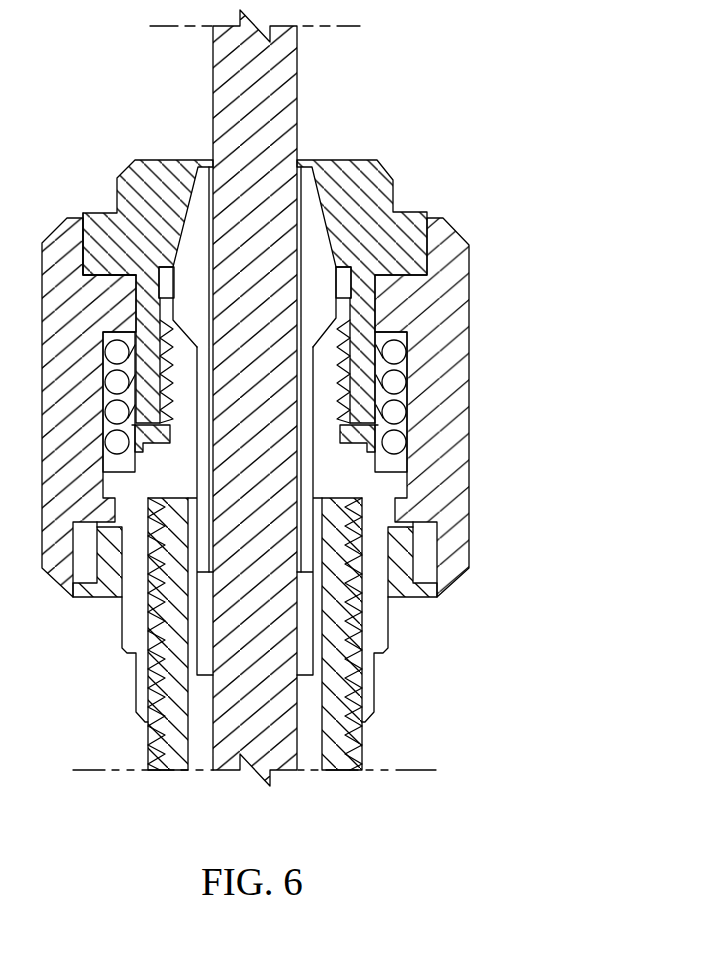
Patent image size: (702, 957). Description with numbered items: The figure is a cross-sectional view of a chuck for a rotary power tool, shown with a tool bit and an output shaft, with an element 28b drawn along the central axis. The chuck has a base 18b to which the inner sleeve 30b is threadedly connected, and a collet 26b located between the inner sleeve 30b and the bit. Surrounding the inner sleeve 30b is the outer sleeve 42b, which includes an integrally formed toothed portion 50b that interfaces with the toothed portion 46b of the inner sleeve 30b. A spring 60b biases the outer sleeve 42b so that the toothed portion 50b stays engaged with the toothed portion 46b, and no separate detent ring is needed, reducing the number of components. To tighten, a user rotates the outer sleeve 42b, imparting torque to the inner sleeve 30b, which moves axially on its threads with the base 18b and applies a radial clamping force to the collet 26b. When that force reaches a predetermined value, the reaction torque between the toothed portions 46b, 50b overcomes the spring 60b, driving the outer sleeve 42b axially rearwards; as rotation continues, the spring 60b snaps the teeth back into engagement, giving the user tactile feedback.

The rod / shaft 28b is at (223, 90).
The collet 26b is at (193, 233).
The toothed portion 50b is at (107, 267).
The inner sleeve 30b is at (383, 168).
The outer sleeve 42b is at (460, 227).
The toothed portion 46b is at (403, 272).
The spring 60b is at (409, 440).
The base 18b is at (358, 477).